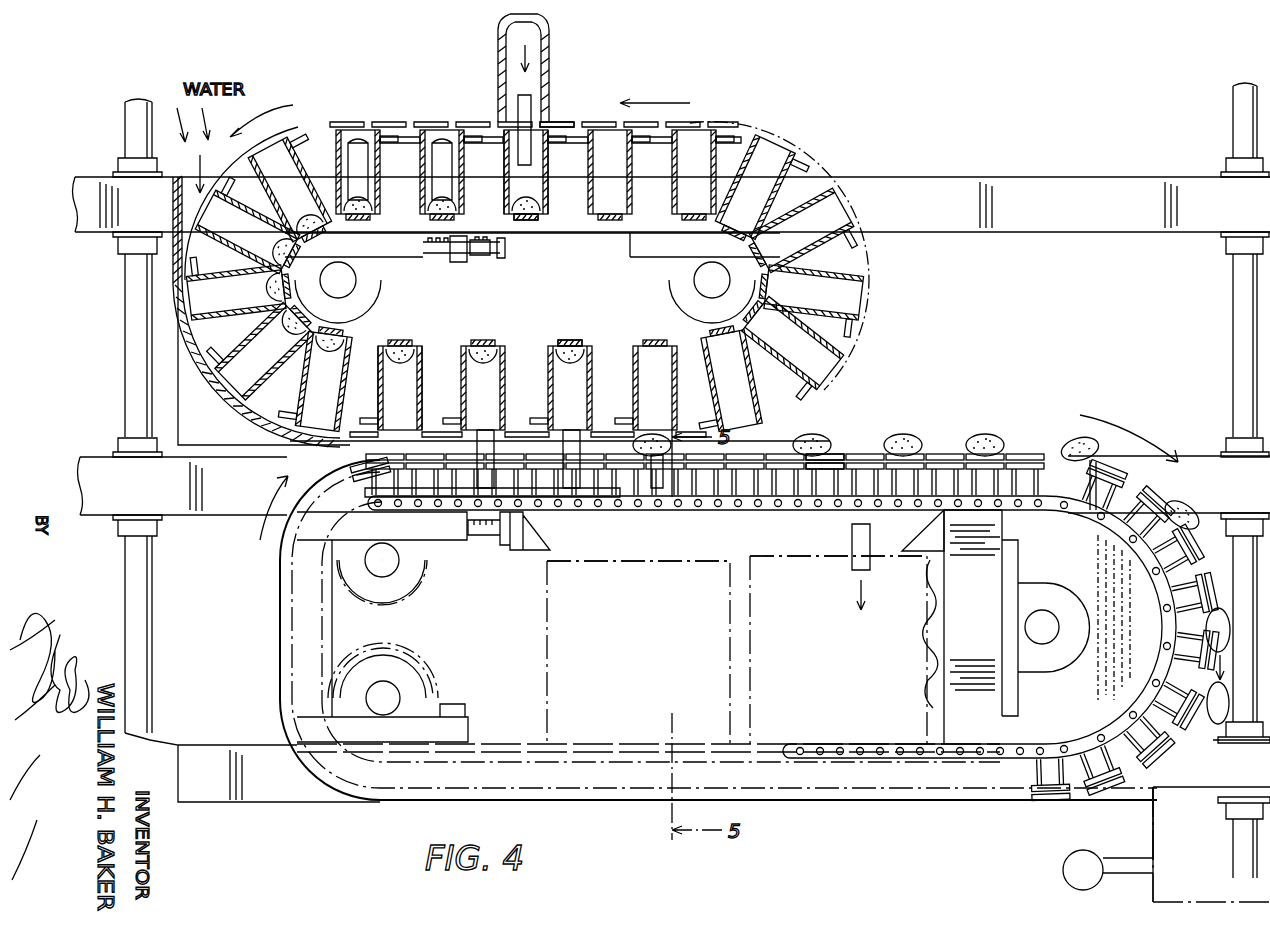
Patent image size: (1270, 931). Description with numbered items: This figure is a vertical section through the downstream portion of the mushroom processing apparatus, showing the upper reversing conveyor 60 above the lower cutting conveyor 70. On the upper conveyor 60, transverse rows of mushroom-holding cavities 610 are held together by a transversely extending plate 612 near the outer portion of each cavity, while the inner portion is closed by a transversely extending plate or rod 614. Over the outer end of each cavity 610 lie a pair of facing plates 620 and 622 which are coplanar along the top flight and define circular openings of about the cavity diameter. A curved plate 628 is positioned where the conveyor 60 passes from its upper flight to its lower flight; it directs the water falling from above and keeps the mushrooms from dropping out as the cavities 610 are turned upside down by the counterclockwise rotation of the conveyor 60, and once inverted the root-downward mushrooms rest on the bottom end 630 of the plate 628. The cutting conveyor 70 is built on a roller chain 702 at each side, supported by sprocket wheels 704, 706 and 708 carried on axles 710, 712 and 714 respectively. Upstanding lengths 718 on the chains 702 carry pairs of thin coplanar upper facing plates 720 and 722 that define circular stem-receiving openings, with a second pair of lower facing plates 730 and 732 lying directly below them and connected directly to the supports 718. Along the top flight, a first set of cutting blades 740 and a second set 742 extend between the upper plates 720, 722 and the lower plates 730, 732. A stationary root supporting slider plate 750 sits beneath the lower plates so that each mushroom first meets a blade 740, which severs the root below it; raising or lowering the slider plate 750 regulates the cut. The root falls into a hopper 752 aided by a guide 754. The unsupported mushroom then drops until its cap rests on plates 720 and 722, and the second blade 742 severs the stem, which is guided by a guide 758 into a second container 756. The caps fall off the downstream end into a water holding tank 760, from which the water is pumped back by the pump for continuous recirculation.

The upper reversing conveyor 60 is at (88, 374).
The lower cutting conveyor 70 is at (1150, 870).
The mushroom-holding cavities 610 is at (420, 185).
The transversely extending plate 612 is at (552, 150).
The transversely extending plate or rod 614 is at (525, 222).
The facing plate 620 is at (560, 125).
The facing plate 622 is at (500, 120).
The curved plate 628 is at (160, 294).
The bottom end of the curved plate 630 is at (308, 446).
The roller chain 702 is at (453, 513).
The sprocket wheel 704 is at (390, 592).
The sprocket wheel 706 is at (345, 670).
The sprocket wheel 708 is at (925, 610).
The axle 710 is at (392, 562).
The axle 712 is at (395, 695).
The axle 714 is at (1052, 627).
The upstanding lengths 718 is at (916, 479).
The upper facing plate 720 is at (792, 459).
The upper facing plate 722 is at (840, 458).
The lower facing plate 730 is at (873, 458).
The lower facing plate 732 is at (940, 470).
The first set of cutting blades 740 is at (654, 446).
The second set of cutting blades 742 is at (825, 451).
The root supporting slider plate 750 is at (619, 538).
The hopper 752 is at (547, 680).
The guide 754 is at (525, 548).
The second receiving container 756 is at (748, 670).
The guide 758 is at (936, 509).
The water holding tank 760 is at (1151, 809).